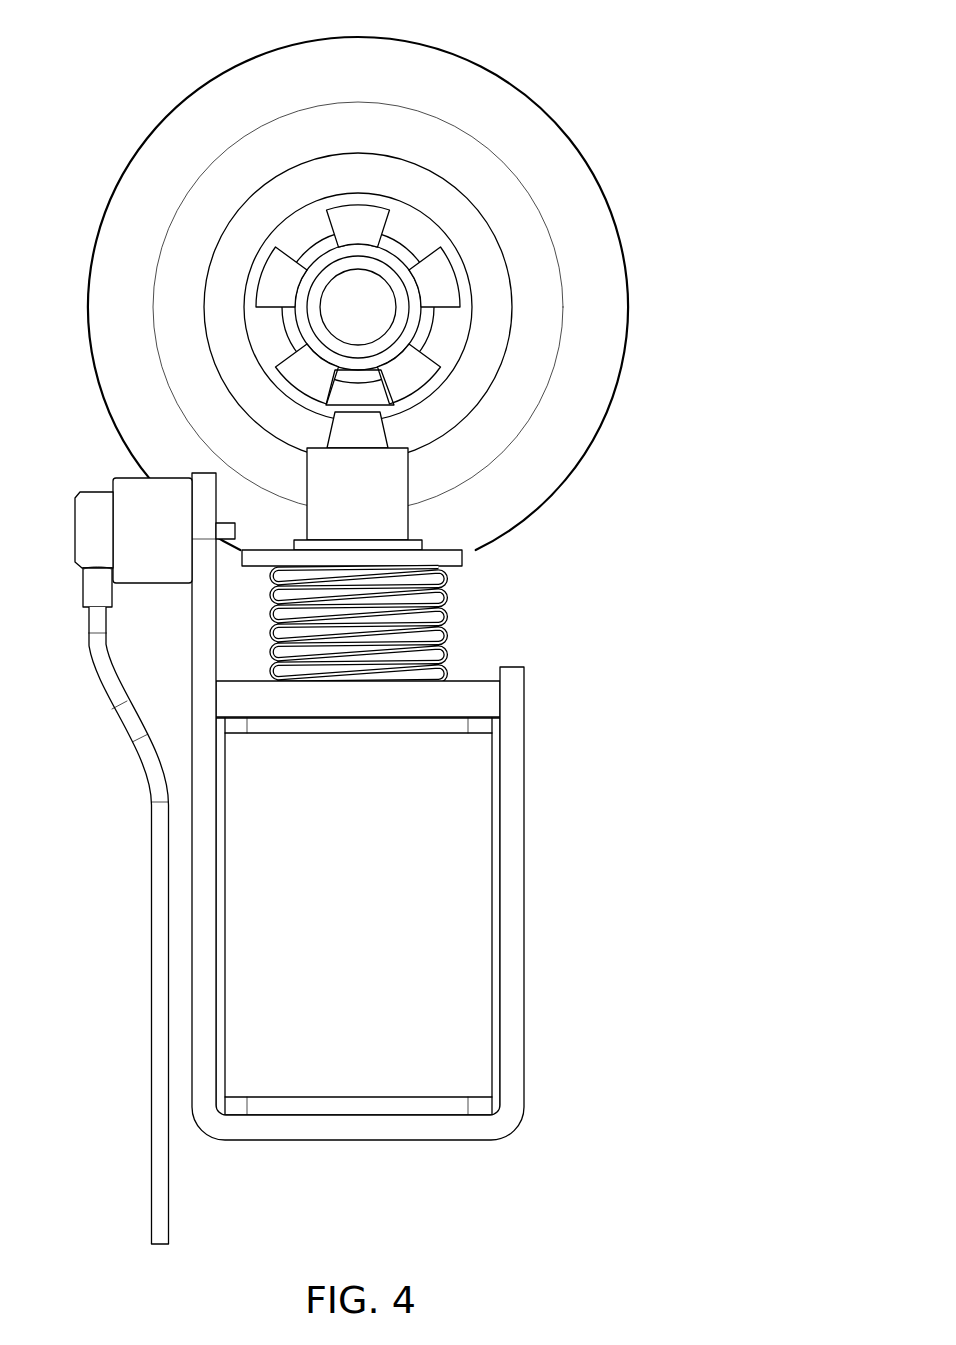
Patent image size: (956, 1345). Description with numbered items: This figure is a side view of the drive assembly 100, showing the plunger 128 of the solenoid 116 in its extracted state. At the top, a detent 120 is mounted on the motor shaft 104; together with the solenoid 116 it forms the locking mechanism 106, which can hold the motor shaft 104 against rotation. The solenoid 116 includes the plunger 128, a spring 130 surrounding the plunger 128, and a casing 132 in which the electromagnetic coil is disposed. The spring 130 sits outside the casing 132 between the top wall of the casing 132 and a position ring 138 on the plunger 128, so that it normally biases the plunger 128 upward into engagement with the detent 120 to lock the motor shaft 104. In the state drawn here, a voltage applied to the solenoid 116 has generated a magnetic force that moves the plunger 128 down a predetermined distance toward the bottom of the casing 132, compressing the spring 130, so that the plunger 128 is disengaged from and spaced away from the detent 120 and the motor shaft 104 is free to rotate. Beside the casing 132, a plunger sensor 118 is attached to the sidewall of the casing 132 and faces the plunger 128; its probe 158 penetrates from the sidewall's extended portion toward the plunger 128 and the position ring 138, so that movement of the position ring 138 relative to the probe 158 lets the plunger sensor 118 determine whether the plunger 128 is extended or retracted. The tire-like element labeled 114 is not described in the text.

The drive assembly 100 is at (373, 624).
The motor shaft 104 is at (336, 319).
The locking mechanism 106 is at (479, 660).
The tire 114 is at (627, 354).
The solenoid 116 is at (526, 725).
The plunger sensor 118 is at (118, 721).
The detent 120 is at (421, 394).
The plunger 128 is at (375, 462).
The spring 130 is at (437, 603).
The casing 132 is at (518, 879).
The position ring 138 is at (449, 559).
The probe 158 is at (225, 537).